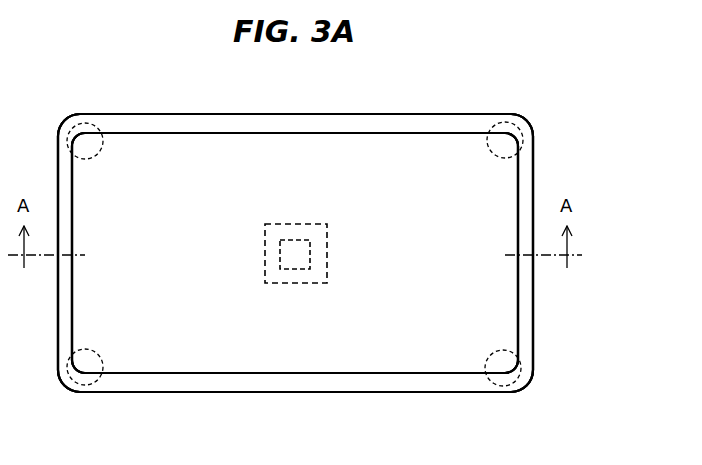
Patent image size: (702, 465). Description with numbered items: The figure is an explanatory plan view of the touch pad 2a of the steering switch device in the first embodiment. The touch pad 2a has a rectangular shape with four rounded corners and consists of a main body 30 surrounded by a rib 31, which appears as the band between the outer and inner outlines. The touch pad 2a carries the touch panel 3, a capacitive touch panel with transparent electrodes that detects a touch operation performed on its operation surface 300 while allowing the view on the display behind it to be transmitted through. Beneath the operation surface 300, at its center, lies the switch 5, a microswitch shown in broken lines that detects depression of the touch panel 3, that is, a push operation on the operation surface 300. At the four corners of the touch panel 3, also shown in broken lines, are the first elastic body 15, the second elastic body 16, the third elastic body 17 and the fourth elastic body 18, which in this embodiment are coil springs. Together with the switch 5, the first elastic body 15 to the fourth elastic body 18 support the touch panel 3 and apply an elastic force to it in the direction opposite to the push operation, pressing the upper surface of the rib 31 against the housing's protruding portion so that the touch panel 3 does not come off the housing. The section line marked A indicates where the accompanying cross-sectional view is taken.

The touch pad 2a is at (538, 104).
The touch panel 3 is at (536, 146).
The main body 30 is at (520, 178).
The rib 31 is at (522, 313).
The operation surface 300 is at (507, 332).
The fourth elastic body 18 is at (72, 133).
The first elastic body 15 is at (500, 122).
The third elastic body 17 is at (87, 386).
The second elastic body 16 is at (512, 386).
The switch 5 is at (296, 222).